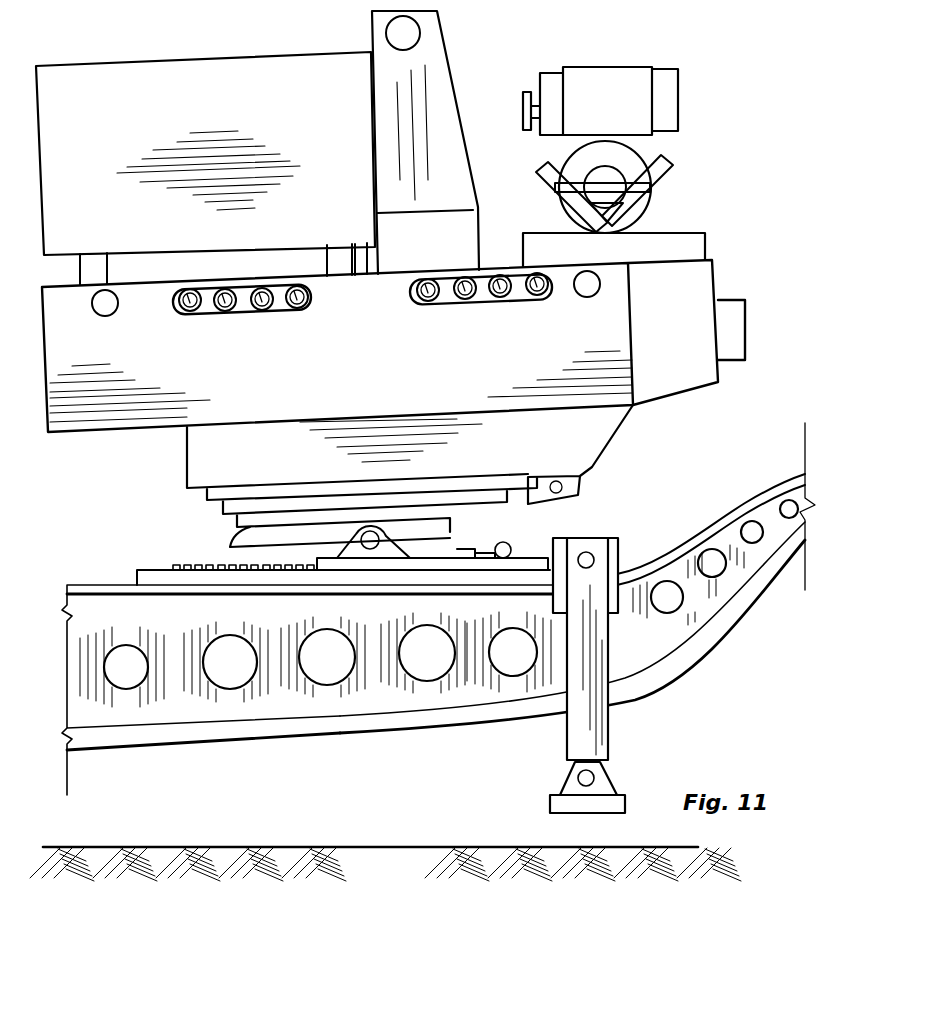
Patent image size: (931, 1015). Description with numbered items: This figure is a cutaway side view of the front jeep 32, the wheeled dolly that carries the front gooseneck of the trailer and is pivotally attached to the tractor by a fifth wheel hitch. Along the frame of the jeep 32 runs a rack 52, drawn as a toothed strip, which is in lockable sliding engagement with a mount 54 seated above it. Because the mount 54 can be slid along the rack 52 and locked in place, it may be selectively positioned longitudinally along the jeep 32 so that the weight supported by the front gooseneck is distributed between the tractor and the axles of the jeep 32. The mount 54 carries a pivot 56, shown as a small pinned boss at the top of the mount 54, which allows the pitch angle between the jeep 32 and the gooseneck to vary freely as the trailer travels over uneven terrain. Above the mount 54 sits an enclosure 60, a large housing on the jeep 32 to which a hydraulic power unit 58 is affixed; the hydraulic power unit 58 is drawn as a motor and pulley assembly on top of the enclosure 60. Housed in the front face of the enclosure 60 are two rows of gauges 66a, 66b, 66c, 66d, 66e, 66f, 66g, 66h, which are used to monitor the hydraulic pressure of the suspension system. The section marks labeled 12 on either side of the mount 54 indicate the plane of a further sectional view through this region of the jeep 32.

The section line 12- 12 is at (72, 555).
The front jeep 32 is at (737, 507).
The rack 52 is at (157, 570).
The mount 54 is at (422, 556).
The pivot 56 is at (370, 549).
The hydraulic power unit 58 is at (620, 75).
The enclosure 60 is at (720, 280).
The gauge 66a is at (187, 312).
The gauge 66b is at (222, 312).
The gauge 66c is at (267, 310).
The gauge 66d is at (300, 309).
The gauge 66e is at (425, 302).
The gauge 66f is at (462, 300).
The gauge 66g is at (503, 298).
The gauge 66h is at (545, 296).